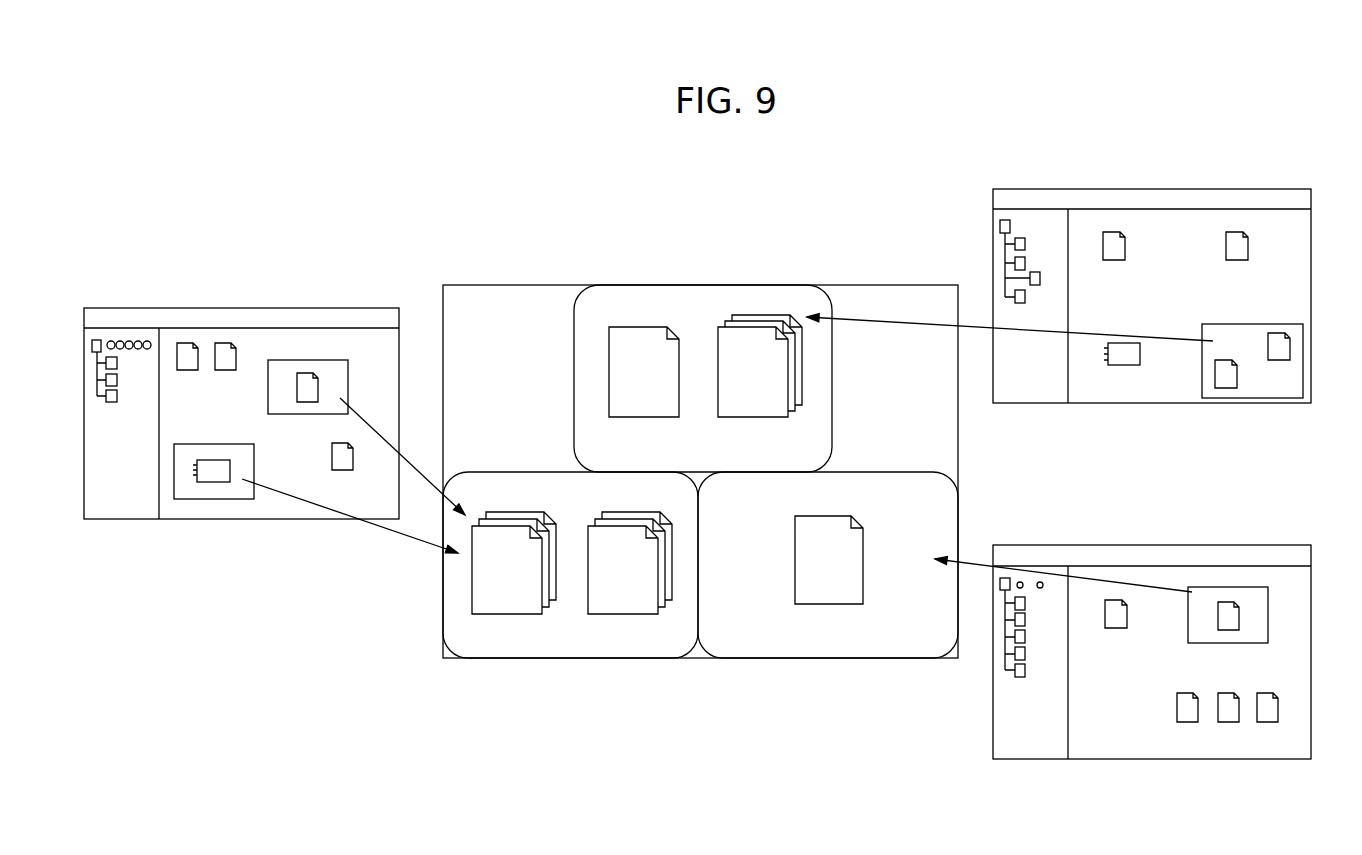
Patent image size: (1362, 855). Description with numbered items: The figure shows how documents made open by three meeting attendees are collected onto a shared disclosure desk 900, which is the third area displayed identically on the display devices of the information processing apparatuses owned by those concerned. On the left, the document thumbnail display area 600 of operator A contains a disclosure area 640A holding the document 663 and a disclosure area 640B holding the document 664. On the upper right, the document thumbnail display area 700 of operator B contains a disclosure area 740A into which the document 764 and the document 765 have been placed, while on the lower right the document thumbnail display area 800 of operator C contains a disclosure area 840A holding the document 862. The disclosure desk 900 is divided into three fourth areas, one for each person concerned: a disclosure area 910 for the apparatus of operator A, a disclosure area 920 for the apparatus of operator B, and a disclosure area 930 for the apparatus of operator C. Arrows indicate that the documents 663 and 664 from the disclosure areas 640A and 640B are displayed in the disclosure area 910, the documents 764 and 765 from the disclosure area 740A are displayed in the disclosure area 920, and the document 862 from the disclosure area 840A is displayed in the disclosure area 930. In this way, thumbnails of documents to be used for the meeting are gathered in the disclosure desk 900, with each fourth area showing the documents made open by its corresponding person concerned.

The document thumbnail display area 600 is at (356, 294).
The disclosure area 640A is at (297, 405).
The disclosure area 640B is at (214, 500).
The document thumbnail display area 700 is at (1272, 178).
The disclosure area 740A is at (1250, 388).
The document thumbnail display area 800 is at (1272, 535).
The disclosure area 840A is at (1229, 635).
The disclosure desk 900 is at (500, 268).
The disclosure area 910 is at (498, 490).
The disclosure area 920 is at (702, 295).
The disclosure area 930 is at (891, 490).
The document 663 is at (509, 600).
The document 664 is at (627, 600).
The document 764 is at (642, 407).
The document 765 is at (753, 407).
The document 862 is at (831, 593).